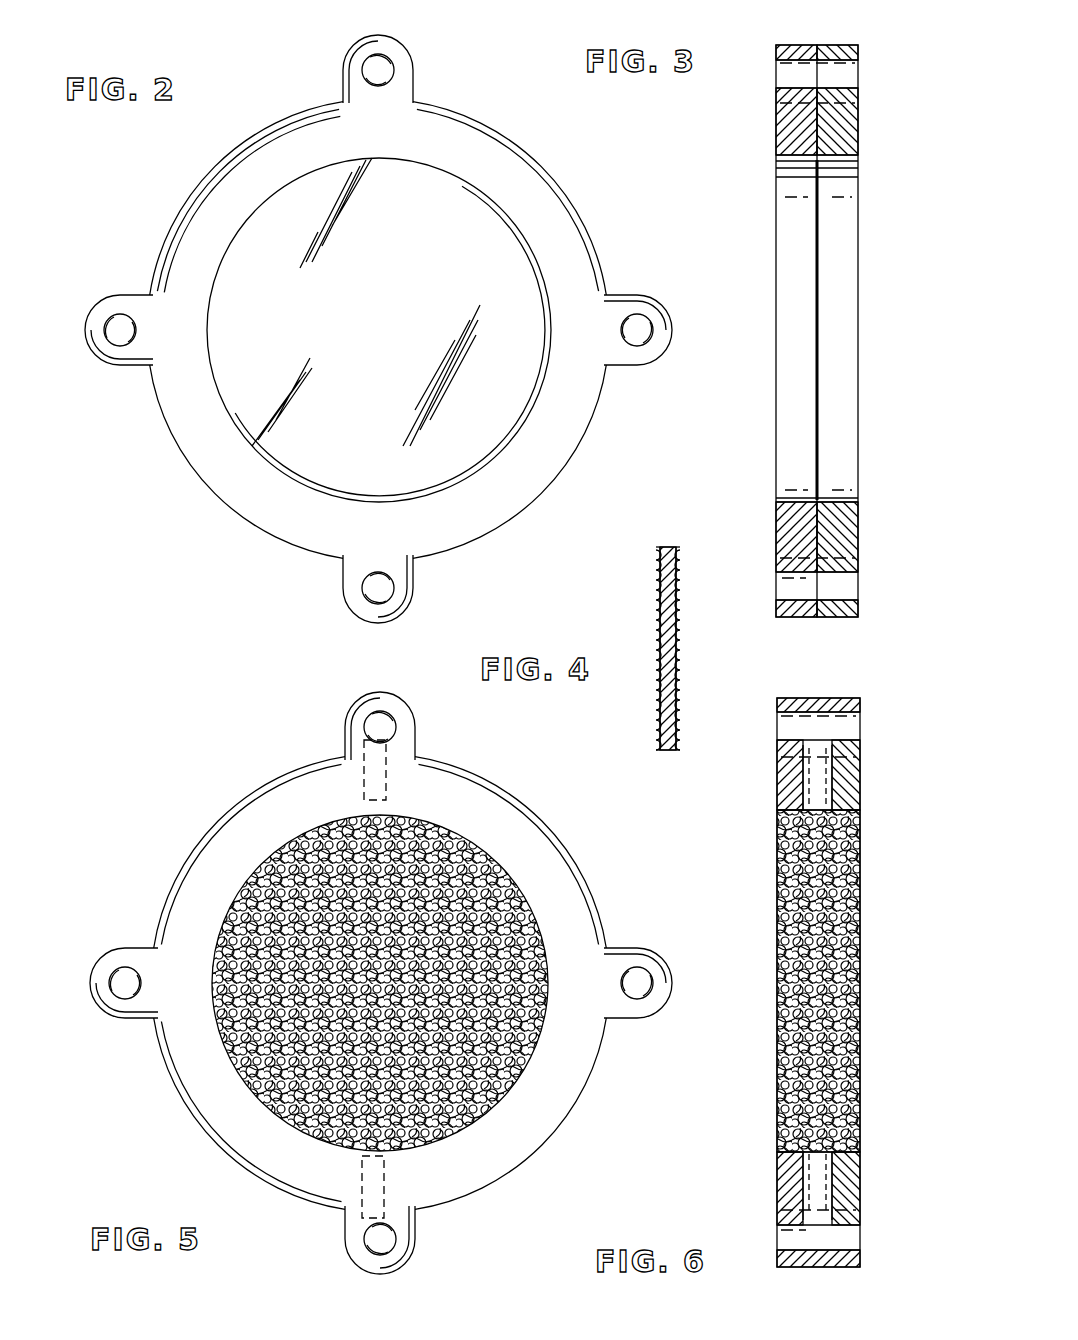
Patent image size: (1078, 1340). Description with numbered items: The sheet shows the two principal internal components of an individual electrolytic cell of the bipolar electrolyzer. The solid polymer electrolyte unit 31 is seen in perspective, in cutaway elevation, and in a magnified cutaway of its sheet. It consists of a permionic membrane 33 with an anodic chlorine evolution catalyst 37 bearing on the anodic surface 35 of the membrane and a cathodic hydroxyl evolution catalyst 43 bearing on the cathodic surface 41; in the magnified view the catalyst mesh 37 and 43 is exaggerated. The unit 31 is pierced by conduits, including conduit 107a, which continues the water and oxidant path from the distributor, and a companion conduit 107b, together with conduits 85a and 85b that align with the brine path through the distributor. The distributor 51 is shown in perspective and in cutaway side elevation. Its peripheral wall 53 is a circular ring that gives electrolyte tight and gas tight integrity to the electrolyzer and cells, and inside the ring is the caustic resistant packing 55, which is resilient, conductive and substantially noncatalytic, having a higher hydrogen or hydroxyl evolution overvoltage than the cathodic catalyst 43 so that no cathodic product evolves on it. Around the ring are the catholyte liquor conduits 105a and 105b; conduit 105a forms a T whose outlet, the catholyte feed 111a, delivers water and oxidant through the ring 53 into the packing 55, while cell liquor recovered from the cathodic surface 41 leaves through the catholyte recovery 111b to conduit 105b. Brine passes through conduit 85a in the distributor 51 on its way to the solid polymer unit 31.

In FIG. 2, the solid polymer electrolyte unit 31 is at (175, 490).
In FIG. 3, the solid polymer electrolyte unit 31 is at (752, 176).
In FIG. 2, the permionic membrane 33 is at (395, 283).
In FIG. 3, the permionic membrane 33 is at (808, 250).
In FIG. 4, the permionic membrane 33 is at (648, 578).
In FIG. 3, the anodic surface 35 is at (815, 414).
In FIG. 4, the anodic surface 35 is at (660, 682).
In FIG. 4, the anodic chlorine evolution catalyst 37 is at (660, 724).
In FIG. 3, the cathodic surface 41 is at (818, 322).
In FIG. 4, the cathodic surface 41 is at (682, 590).
In FIG. 4, the cathodic hydroxyl evolution catalyst 43 is at (680, 636).
In FIG. 5, the distributor 51 is at (166, 1132).
In FIG. 6, the distributor 51 is at (750, 866).
In FIG. 5, the peripheral wall 53 is at (552, 1112).
In FIG. 6, the peripheral wall 53 is at (777, 790).
In FIG. 5, the packing 55 is at (245, 1008).
In FIG. 6, the packing 55 is at (780, 893).
In FIG. 2, the conduit 85a is at (655, 340).
In FIG. 5, the conduit 85a is at (655, 996).
In FIG. 2, the mounting ear 85b is at (108, 310).
In FIG. 5, the mounting ear 85b is at (100, 960).
In FIG. 5, the catholyte liquor conduit 105a is at (348, 1252).
In FIG. 6, the catholyte liquor conduit 105a is at (815, 1267).
In FIG. 5, the catholyte liquor conduit 105b is at (363, 700).
In FIG. 6, the catholyte liquor conduit 105b is at (830, 698).
In FIG. 2, the conduit 107a is at (360, 598).
In FIG. 3, the conduit 107a is at (832, 616).
In FIG. 2, the mounting ear 107b is at (380, 42).
In FIG. 3, the mounting ear 107b is at (814, 44).
In FIG. 5, the catholyte feed 111a is at (408, 1218).
In FIG. 6, the catholyte feed 111a is at (817, 1215).
In FIG. 5, the catholyte recovery 111b is at (360, 778).
In FIG. 6, the catholyte recovery 111b is at (817, 748).